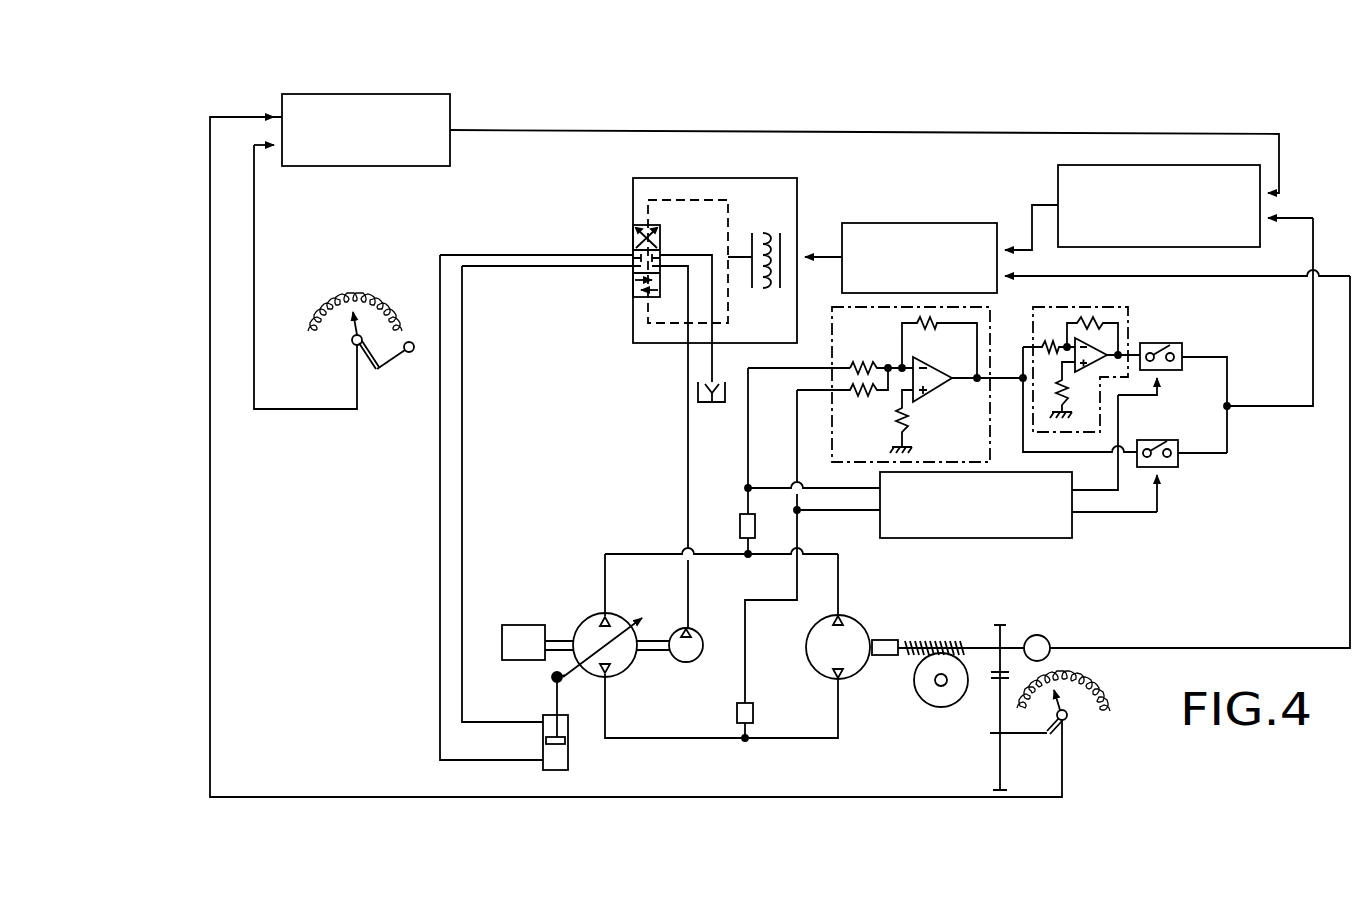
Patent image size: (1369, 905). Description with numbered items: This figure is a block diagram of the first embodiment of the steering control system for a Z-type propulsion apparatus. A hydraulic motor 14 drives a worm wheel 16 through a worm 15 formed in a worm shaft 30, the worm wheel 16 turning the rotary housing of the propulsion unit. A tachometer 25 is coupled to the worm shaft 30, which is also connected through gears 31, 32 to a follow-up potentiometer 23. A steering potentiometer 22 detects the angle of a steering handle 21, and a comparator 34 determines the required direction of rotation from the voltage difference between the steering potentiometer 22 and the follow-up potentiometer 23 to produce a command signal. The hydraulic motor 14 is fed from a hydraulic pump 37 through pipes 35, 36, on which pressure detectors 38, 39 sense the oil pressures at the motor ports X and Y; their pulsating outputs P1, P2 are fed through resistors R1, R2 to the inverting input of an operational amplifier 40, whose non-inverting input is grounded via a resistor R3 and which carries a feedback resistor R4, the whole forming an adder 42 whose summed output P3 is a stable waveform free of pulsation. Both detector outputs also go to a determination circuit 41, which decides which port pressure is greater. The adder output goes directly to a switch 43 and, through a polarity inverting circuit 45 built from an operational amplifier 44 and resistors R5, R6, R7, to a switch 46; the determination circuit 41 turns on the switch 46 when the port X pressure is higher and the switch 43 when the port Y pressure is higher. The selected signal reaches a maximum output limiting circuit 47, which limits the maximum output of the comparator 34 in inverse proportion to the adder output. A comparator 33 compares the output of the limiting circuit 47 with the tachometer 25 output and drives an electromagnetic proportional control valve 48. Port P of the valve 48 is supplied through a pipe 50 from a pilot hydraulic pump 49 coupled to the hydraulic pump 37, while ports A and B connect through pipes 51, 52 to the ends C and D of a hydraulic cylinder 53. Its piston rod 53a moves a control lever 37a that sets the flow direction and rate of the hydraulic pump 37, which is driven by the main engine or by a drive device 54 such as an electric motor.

The hydraulic motor 14 is at (866, 628).
The worm 15 is at (950, 642).
The worm wheel 16 is at (941, 708).
The steering handle 21 is at (392, 356).
The steering potentiometer 22 is at (356, 330).
The follow-up potentiometer 23 is at (1067, 722).
The tachometer 25 is at (1048, 640).
The worm shaft 30 is at (905, 648).
The gear 31 is at (1004, 627).
The gear 32 is at (1002, 776).
The comparator 33 is at (957, 223).
The comparator 34 is at (452, 100).
The pipe 35 is at (757, 742).
The pipe 36 is at (840, 590).
The hydraulic pump 37 is at (617, 672).
The control lever 37a is at (570, 680).
The pressure detector 38 is at (754, 712).
The pressure detector 39 is at (740, 522).
The operational amplifier 40 is at (968, 387).
The determination circuit 41 is at (1072, 536).
The adder 42 is at (833, 333).
The switch 43 is at (1178, 467).
The operational amplifier 44 is at (1107, 367).
The polarity inverting circuit 45 is at (1128, 335).
The switch 46 is at (1182, 350).
The maximum output limiting circuit 47 is at (1058, 190).
The electromagnetic proportional control valve 48 is at (797, 203).
The pilot hydraulic pump 49 is at (690, 662).
The pipe 50 is at (688, 459).
The pipe 51 is at (463, 492).
The pipe 52 is at (440, 553).
The hydraulic cylinder 53 is at (568, 762).
The piston rod 53a is at (553, 680).
The drive device 54 is at (528, 625).
The resistor R1 is at (842, 397).
The resistor R2 is at (880, 355).
The resistor R3 is at (916, 421).
The resistor R4 is at (939, 347).
The resistor R5 is at (1074, 390).
The resistor R6 is at (1100, 318).
The resistor R7 is at (1045, 346).
The output waveform of pressure detector P1 is at (746, 655).
The output waveform of pressure detector P2 is at (750, 452).
The output waveform of adder P3 is at (1064, 399).